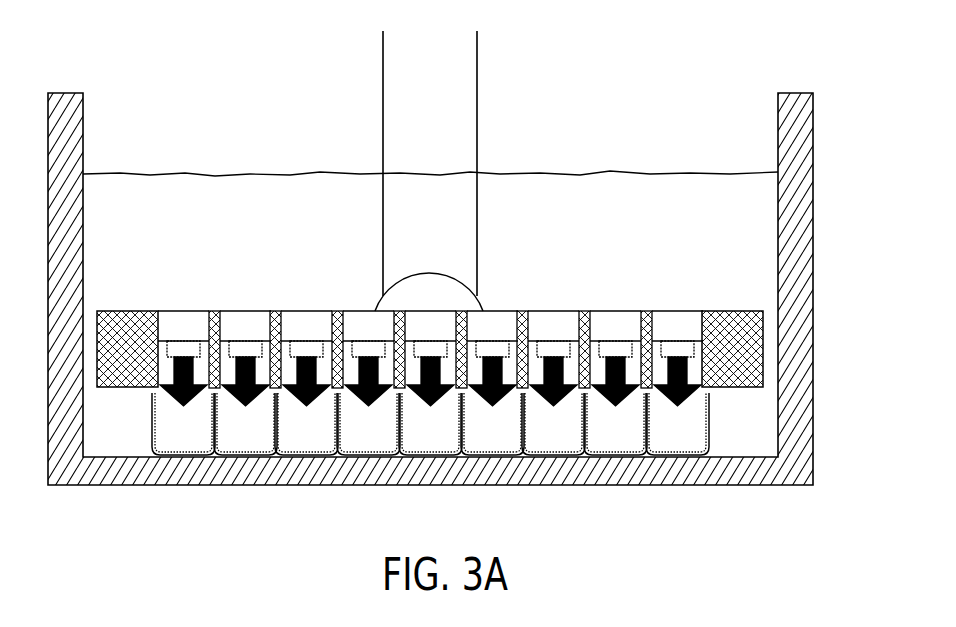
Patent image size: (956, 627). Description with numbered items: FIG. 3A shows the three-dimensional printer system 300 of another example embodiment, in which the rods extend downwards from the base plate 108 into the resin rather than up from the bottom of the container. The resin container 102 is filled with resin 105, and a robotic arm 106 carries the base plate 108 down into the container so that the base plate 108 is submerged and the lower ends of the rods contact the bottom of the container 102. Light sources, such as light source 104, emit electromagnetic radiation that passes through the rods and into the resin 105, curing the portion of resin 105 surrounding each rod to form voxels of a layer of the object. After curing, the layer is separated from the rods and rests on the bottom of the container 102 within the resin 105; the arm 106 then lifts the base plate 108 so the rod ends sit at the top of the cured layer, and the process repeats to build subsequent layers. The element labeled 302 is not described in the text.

The 3D printer system 300 is at (228, 86).
The resin container 102 is at (813, 182).
The resin 105 is at (735, 173).
The robotic arm 106 is at (478, 128).
The base plate 108 is at (713, 311).
The light source 104 is at (213, 312).
The collection cup / receptacle 302 is at (150, 421).